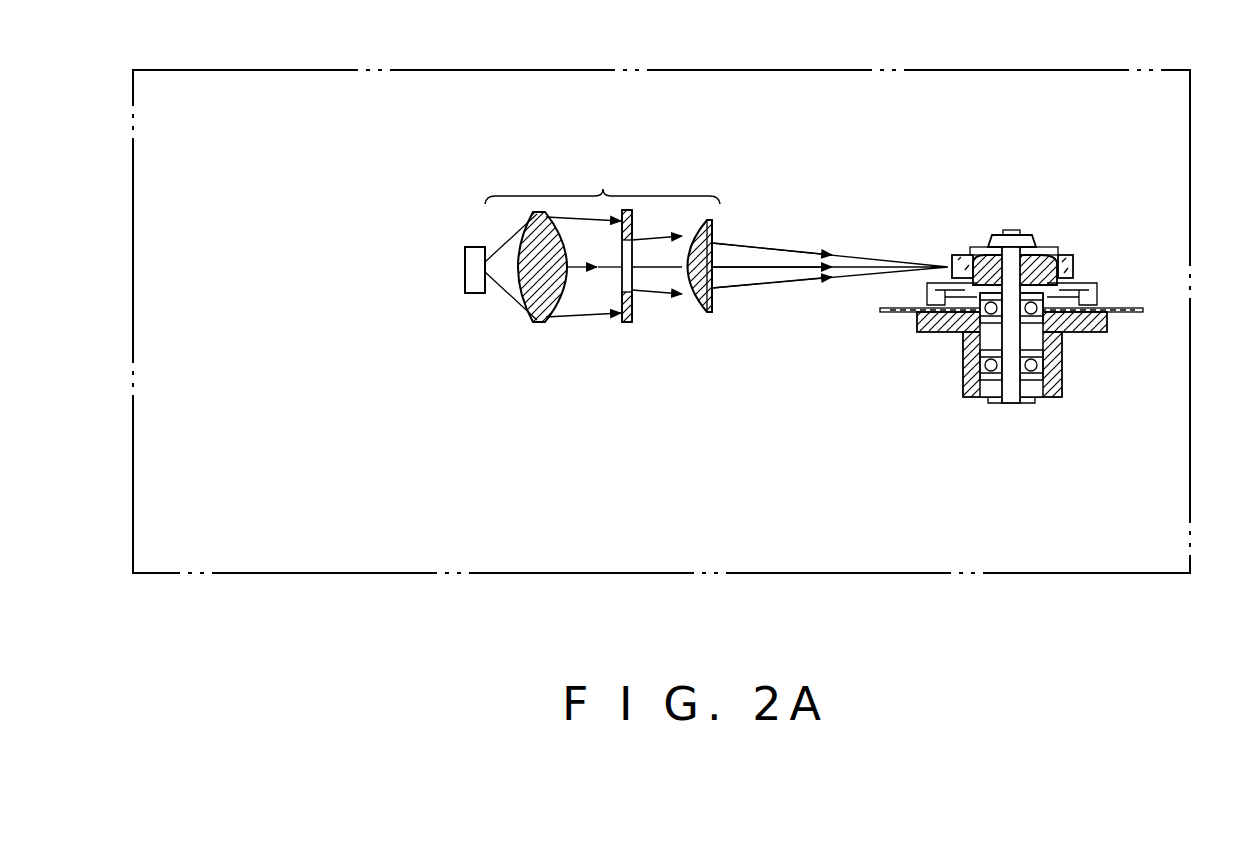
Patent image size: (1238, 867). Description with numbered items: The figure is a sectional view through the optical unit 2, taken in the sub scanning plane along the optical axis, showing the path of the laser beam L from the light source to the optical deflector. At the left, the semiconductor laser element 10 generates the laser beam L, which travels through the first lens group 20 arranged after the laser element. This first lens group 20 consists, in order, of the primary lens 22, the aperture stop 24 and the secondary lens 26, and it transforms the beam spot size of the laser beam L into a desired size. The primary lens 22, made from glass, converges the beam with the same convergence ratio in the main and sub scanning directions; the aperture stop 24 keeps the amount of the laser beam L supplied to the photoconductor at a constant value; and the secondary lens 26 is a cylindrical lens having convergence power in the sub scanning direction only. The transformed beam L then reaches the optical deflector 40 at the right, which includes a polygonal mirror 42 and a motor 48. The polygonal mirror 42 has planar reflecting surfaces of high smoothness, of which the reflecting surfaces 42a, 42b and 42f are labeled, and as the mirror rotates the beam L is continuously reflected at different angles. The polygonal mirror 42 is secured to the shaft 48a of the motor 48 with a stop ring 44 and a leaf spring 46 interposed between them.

The optical unit 2 is at (996, 70).
The semiconductor laser element 10 is at (473, 295).
The first lens group 20 is at (602, 174).
The primary lens 22 is at (538, 324).
The aperture stop 24 is at (626, 324).
The secondary lens 26 is at (690, 314).
The laser beam L is at (812, 263).
The optical deflector 40 is at (1017, 364).
The polygonal mirror 42 is at (1052, 237).
The reflecting surface 42a is at (984, 243).
The reflecting surface 42b is at (1075, 268).
The reflecting surface 42f is at (957, 254).
The stop ring 44 is at (1024, 238).
The leaf spring 46 is at (1068, 252).
The motor 48 is at (953, 331).
The shaft 48a is at (1010, 405).